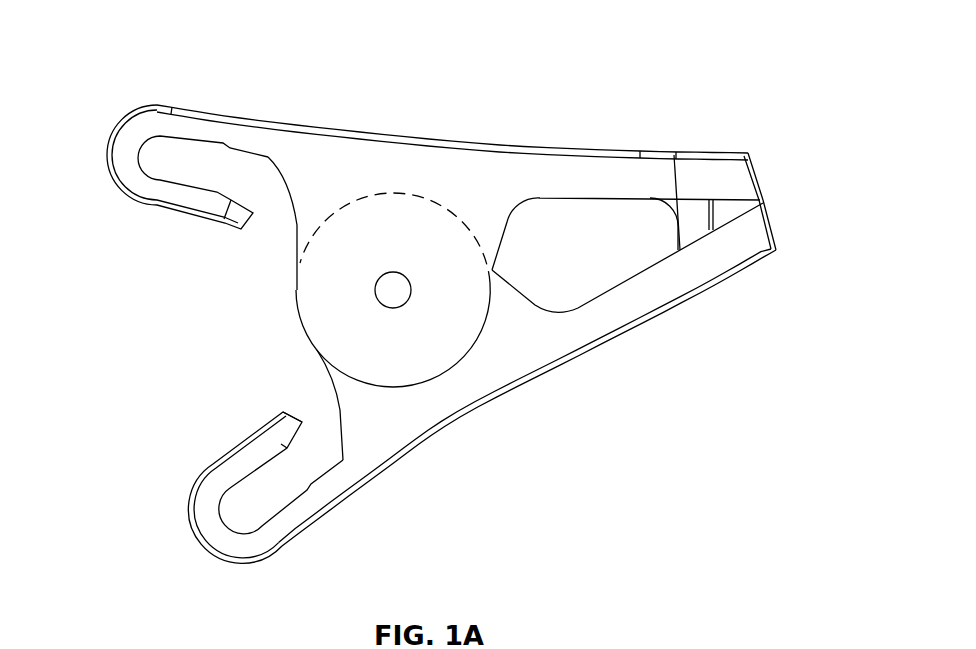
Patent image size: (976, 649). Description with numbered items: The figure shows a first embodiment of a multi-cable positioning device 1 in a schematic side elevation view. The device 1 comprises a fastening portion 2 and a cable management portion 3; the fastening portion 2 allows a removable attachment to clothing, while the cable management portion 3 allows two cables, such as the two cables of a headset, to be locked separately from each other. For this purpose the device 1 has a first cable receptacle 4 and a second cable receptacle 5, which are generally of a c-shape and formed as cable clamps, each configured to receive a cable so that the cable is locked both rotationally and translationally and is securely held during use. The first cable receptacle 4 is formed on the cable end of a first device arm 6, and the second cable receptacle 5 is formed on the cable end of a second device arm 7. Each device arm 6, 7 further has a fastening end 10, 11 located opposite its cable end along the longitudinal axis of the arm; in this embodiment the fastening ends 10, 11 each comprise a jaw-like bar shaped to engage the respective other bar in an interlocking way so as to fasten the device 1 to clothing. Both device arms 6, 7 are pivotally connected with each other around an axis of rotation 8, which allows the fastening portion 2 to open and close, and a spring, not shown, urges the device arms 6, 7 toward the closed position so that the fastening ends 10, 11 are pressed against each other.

The multi-cable positioning device 1 is at (95, 33).
The fastening portion 2 is at (795, 204).
The cable management portion 3 is at (155, 432).
The first cable receptacle 4 is at (145, 108).
The second cable receptacle 5 is at (238, 560).
The first device arm 6 is at (333, 147).
The second device arm 7 is at (577, 337).
The axis of rotation 8 is at (395, 288).
The fastening end 10 is at (735, 172).
The fastening end 11 is at (777, 243).